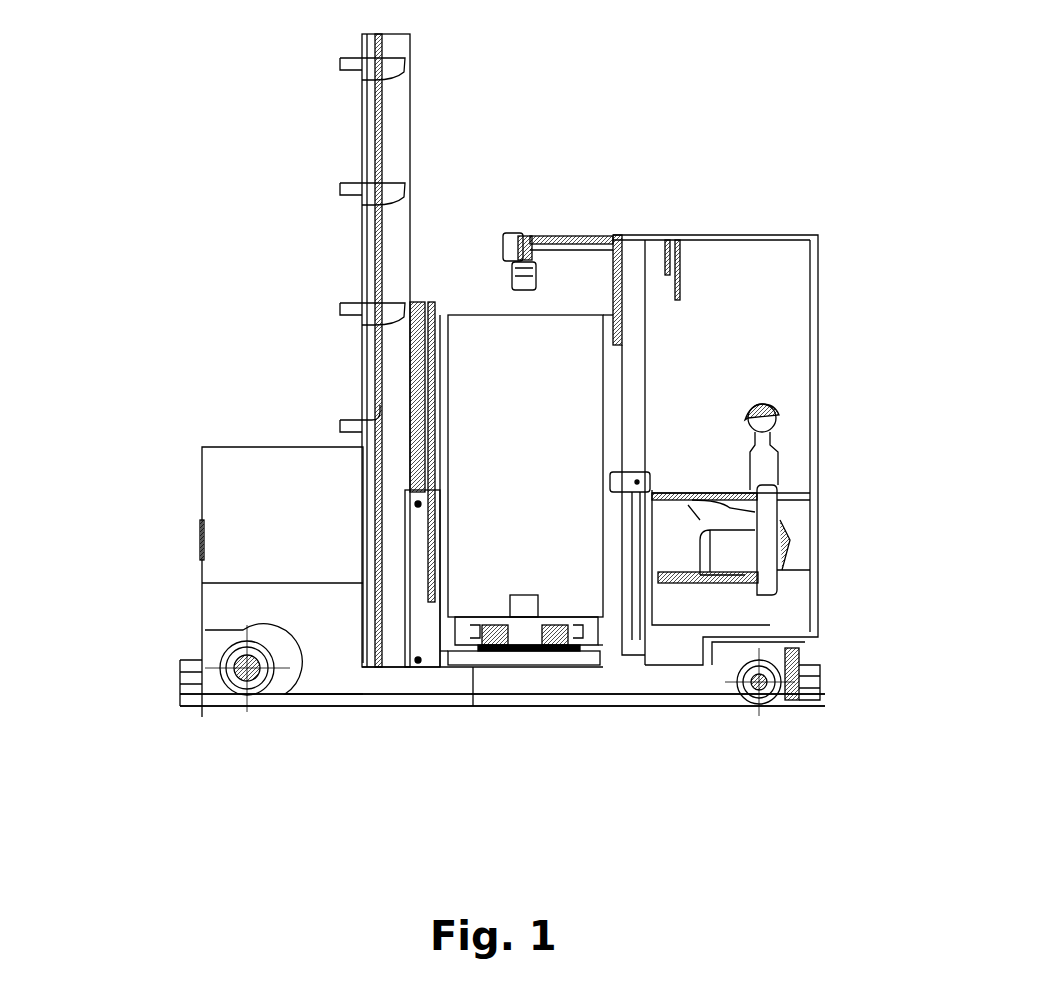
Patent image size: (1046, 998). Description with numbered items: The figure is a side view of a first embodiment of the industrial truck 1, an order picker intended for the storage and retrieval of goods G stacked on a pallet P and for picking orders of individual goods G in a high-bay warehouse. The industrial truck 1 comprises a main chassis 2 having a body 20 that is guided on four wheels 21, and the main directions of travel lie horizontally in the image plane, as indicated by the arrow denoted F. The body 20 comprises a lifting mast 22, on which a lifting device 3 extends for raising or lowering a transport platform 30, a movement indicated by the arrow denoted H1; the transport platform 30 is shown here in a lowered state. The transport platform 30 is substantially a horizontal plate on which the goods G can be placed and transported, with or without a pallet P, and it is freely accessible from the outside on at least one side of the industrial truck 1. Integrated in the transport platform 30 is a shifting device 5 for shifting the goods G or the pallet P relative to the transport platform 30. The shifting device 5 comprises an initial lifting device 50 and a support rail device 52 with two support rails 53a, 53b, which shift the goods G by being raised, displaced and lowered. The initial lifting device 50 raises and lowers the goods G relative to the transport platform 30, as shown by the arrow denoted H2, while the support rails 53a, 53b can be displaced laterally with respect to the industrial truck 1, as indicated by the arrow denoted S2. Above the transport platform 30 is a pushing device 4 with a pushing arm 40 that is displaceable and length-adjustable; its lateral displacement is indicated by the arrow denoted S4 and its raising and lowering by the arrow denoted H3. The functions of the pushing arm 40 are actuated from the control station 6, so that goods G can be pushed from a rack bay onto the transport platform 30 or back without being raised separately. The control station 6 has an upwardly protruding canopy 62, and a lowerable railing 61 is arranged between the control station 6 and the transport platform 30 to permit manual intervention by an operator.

The industrial truck 1 is at (225, 250).
The main chassis 2 is at (192, 615).
The lifting device 3 is at (405, 545).
The pushing device 4 is at (497, 277).
The shifting device 5 is at (573, 648).
The control station 6 is at (832, 422).
The body 20 is at (330, 694).
The wheel 21 is at (230, 692).
The lifting mast 22 is at (385, 133).
The transport platform 30 is at (462, 655).
The pushing arm 40 is at (545, 280).
The initial lifting device 50 is at (500, 648).
The support rail device 52 is at (494, 652).
The support rail 53a is at (492, 627).
The support rail 53b is at (560, 627).
The railing 61 is at (655, 487).
The canopy 62 is at (755, 233).
The goods G is at (493, 340).
The pallet P is at (597, 648).
The transverse displacement of support rail S2 is at (550, 584).
The transverse displacement of pushing arm S4 is at (500, 297).
The raising/lowering of transport platform H1 is at (546, 508).
The raising/lowering of support rail H2 is at (500, 508).
The raising/lowering of pushing device H3 is at (578, 332).
The main direction of travel of industrial truck F is at (900, 660).